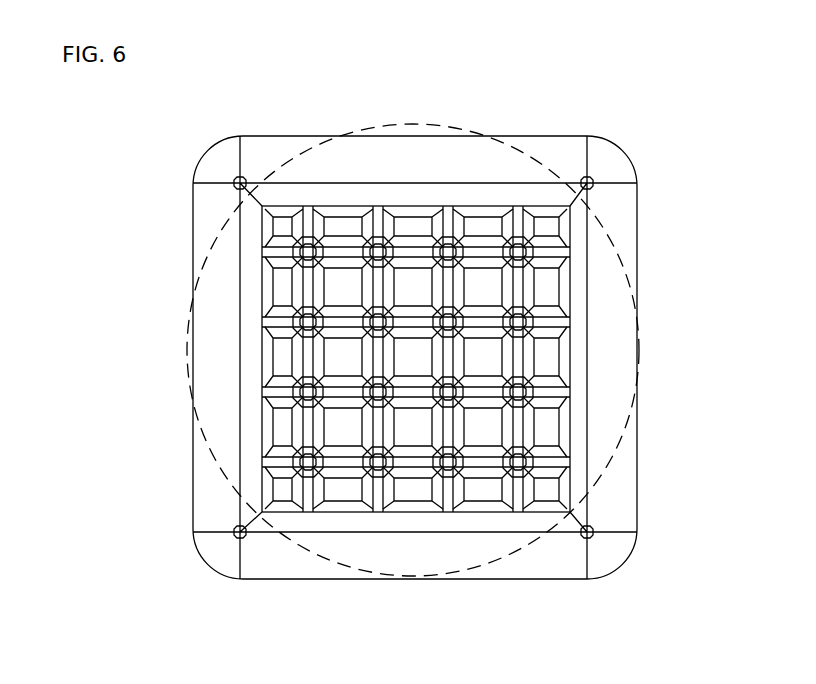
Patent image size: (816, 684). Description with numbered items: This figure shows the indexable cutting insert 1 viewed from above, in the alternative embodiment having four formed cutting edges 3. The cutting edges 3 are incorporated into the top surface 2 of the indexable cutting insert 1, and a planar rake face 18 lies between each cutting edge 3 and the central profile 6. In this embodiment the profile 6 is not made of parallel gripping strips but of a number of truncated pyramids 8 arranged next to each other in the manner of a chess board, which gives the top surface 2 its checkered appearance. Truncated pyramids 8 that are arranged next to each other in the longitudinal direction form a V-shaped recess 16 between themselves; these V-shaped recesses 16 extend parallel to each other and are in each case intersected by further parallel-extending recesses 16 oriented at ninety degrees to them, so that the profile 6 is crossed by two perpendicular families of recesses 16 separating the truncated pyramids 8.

The indexable cutting insert 1 is at (611, 100).
The top surface 2 is at (488, 358).
The cutting edge 3 is at (258, 134).
The profile 6 is at (420, 358).
The truncated pyramid 8 is at (405, 222).
The V-shaped recess 16 is at (247, 528).
The rake face 18 is at (305, 148).